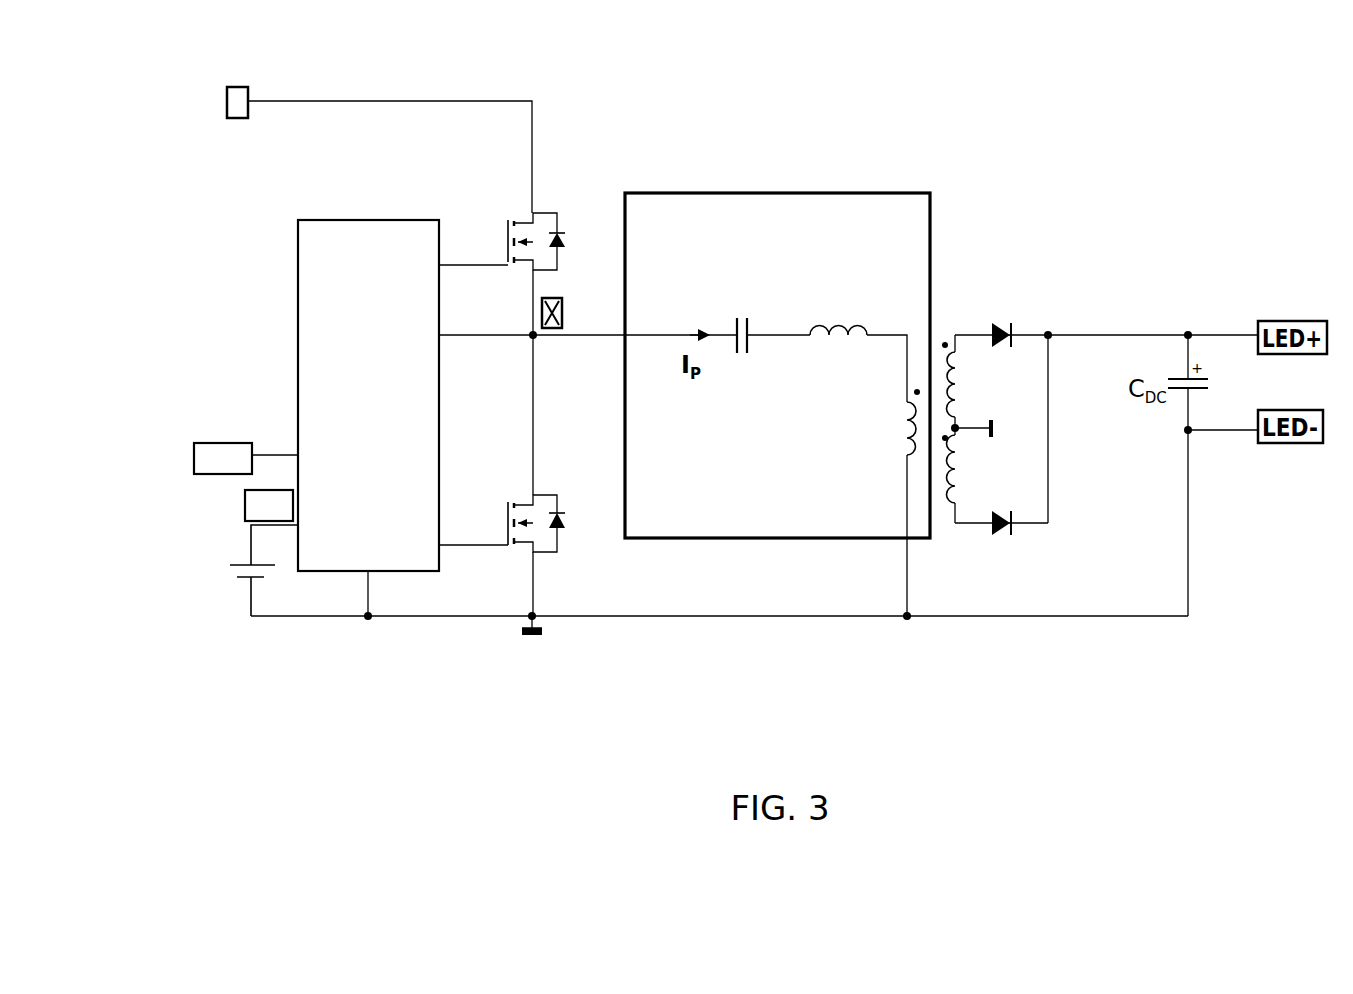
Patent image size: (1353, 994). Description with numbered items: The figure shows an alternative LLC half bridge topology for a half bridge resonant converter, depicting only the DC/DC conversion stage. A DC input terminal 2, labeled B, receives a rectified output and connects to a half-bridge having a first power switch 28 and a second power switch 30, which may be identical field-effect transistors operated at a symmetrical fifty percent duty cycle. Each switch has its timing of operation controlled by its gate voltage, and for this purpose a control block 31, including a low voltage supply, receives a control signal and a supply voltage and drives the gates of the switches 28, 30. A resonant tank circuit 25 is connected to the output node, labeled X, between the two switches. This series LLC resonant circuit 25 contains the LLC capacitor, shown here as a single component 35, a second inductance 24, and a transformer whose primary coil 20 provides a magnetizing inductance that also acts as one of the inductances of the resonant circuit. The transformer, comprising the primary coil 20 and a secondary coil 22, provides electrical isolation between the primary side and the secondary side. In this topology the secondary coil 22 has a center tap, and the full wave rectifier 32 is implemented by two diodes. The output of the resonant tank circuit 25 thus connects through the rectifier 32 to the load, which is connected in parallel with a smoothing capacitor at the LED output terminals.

The DC input terminal 2 is at (227, 93).
The control block 31 is at (297, 268).
The first power switch 28 is at (508, 240).
The second power switch 30 is at (508, 523).
The resonant tank circuit 25 is at (807, 193).
The LLC capacitor 35 is at (737, 333).
The second inductance 24 is at (810, 331).
The primary coil 20 is at (910, 453).
The secondary coil 22 is at (946, 527).
The rectifier 32 is at (984, 299).